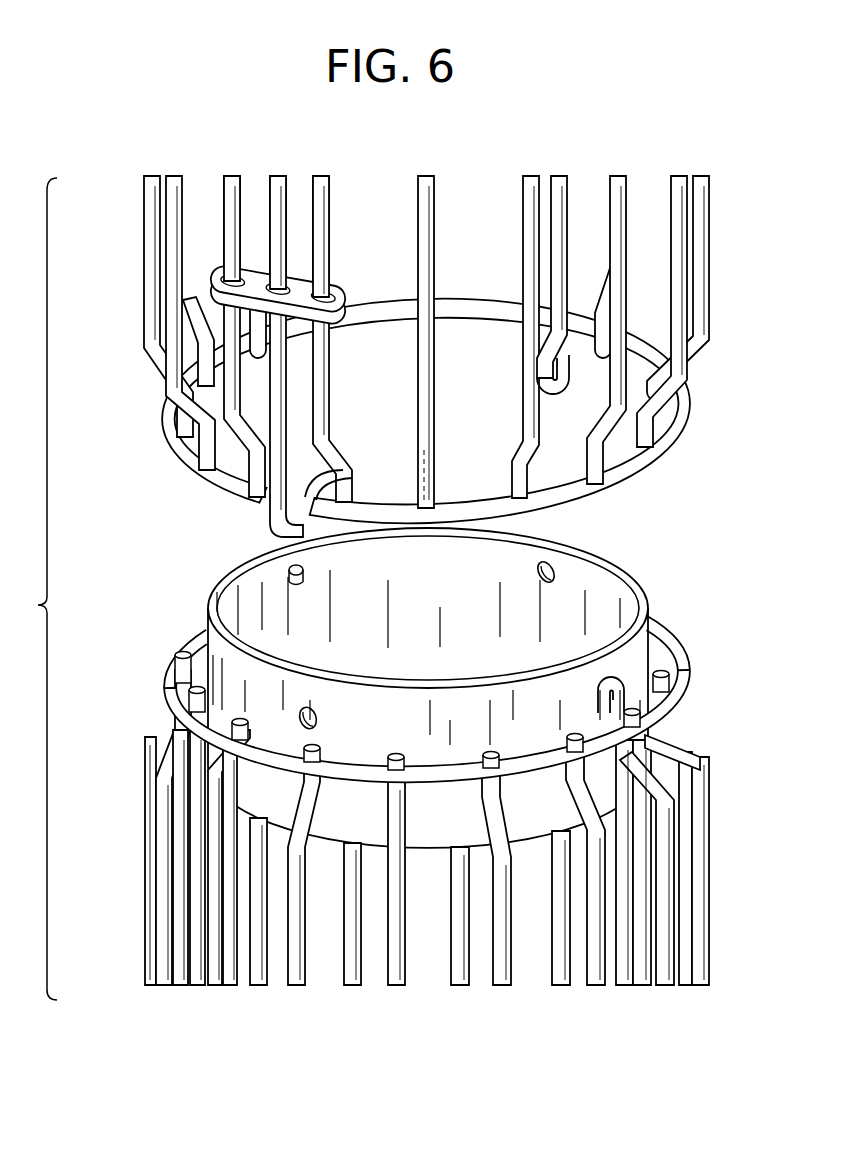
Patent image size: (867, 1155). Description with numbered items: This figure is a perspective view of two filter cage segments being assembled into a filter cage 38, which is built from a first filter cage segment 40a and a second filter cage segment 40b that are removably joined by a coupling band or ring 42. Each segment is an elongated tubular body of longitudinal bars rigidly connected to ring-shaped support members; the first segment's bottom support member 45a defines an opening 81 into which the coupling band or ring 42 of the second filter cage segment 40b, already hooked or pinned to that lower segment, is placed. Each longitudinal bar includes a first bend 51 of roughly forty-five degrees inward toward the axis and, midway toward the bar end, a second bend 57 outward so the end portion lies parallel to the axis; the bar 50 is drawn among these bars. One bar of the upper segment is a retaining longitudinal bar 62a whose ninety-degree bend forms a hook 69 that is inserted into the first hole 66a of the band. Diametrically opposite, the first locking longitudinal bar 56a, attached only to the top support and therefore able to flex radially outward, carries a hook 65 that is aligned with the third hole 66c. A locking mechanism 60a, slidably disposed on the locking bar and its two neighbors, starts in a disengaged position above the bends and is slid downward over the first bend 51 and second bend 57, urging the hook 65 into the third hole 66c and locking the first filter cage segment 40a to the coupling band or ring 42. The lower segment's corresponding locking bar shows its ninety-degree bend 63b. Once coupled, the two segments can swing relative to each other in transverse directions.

The filter cage 38 is at (31, 589).
The first filter cage segment 40a is at (163, 452).
The second filter cage segment 40b is at (131, 722).
The coupling band or ring 42 is at (250, 547).
The bottom support member 45a is at (650, 480).
The electrode rod 50 is at (240, 418).
The first bend 51 is at (168, 386).
The first locking longitudinal bar 56a is at (270, 515).
The second bend 57 is at (183, 422).
The locking mechanism 60a is at (340, 292).
The retaining longitudinal bar 62a is at (575, 195).
The bend 63b is at (697, 750).
The hook 65 is at (337, 478).
The first hole 66a is at (549, 571).
The third hole 66c is at (320, 712).
The hook 69 is at (558, 383).
The opening 81 is at (481, 385).